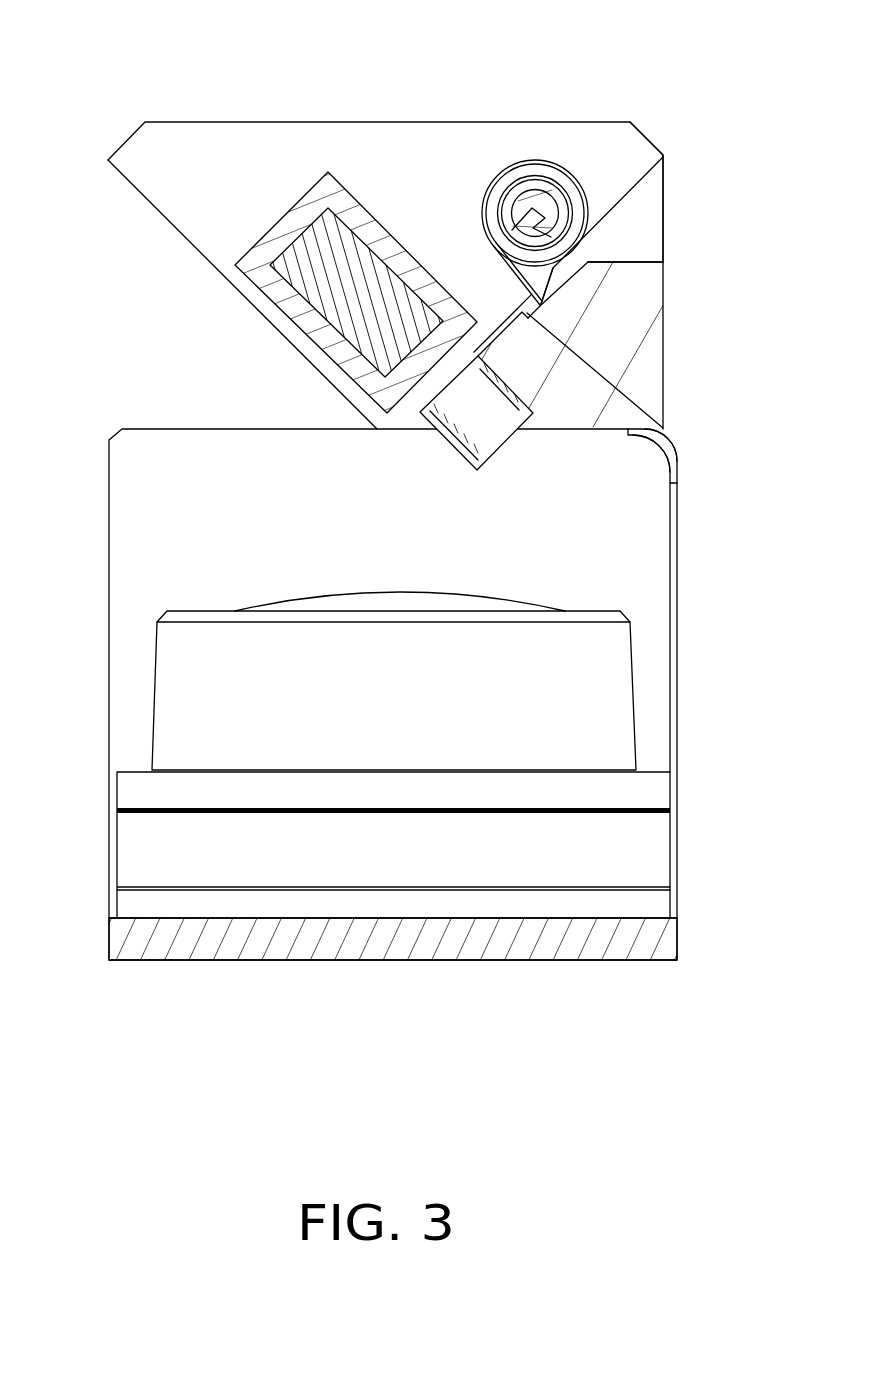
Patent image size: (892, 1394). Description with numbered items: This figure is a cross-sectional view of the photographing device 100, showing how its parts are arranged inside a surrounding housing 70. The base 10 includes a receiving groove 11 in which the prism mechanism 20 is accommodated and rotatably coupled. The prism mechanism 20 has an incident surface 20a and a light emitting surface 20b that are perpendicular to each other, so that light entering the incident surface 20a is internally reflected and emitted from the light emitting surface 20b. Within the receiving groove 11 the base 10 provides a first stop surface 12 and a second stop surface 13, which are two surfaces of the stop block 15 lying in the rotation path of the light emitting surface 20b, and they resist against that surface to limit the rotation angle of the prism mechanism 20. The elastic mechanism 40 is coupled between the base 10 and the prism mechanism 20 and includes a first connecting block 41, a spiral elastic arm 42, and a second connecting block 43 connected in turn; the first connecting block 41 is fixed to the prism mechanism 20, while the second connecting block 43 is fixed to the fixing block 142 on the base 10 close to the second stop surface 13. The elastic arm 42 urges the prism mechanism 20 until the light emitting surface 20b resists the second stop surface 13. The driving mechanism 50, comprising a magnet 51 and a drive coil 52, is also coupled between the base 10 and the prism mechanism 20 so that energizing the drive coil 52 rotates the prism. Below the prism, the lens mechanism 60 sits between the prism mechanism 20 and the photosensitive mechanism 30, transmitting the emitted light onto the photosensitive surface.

The photographing device 100 is at (380, 40).
The base 10 is at (615, 322).
The stop block 15 is at (615, 322).
The receiving groove 11 is at (657, 194).
The first stop surface 12 is at (637, 262).
The second stop surface 13 is at (558, 288).
The fixing block 142 is at (665, 438).
The prism mechanism 20 is at (416, 252).
The incident surface 20a is at (197, 252).
The light emitting surface 20b is at (553, 268).
The photosensitive mechanism 30 is at (642, 840).
The elastic mechanism 40 is at (607, 162).
The first connecting block 41 is at (532, 208).
The elastic arm 42 is at (585, 193).
The second connecting block 43 is at (541, 302).
The driving mechanism 50 is at (345, 265).
The magnet 51 is at (363, 307).
The drive coil 52 is at (455, 408).
The lens mechanism 60 is at (532, 668).
The housing 70 is at (443, 694).